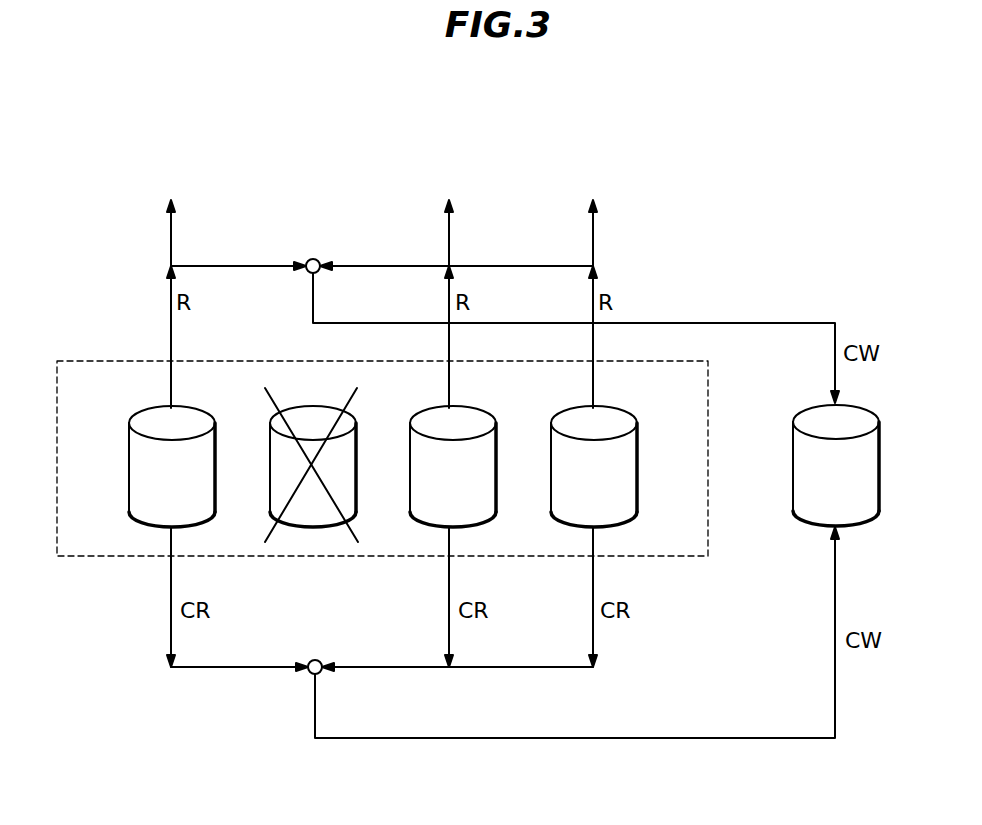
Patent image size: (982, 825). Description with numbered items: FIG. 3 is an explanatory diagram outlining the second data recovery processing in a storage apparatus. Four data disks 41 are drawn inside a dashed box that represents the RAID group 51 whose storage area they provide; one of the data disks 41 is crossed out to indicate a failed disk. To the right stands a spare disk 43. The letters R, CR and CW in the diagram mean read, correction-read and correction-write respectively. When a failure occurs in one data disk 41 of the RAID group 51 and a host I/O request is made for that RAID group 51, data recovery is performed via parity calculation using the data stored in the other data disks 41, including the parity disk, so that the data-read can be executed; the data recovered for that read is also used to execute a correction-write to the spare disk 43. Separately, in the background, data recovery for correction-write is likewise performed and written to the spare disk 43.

The data disk 41 is at (153, 416).
The spare disk 43 is at (815, 418).
The RAID group 51 is at (685, 556).